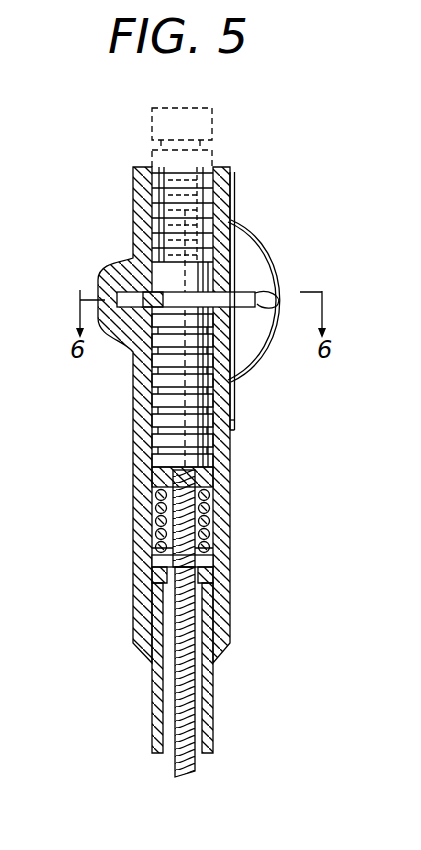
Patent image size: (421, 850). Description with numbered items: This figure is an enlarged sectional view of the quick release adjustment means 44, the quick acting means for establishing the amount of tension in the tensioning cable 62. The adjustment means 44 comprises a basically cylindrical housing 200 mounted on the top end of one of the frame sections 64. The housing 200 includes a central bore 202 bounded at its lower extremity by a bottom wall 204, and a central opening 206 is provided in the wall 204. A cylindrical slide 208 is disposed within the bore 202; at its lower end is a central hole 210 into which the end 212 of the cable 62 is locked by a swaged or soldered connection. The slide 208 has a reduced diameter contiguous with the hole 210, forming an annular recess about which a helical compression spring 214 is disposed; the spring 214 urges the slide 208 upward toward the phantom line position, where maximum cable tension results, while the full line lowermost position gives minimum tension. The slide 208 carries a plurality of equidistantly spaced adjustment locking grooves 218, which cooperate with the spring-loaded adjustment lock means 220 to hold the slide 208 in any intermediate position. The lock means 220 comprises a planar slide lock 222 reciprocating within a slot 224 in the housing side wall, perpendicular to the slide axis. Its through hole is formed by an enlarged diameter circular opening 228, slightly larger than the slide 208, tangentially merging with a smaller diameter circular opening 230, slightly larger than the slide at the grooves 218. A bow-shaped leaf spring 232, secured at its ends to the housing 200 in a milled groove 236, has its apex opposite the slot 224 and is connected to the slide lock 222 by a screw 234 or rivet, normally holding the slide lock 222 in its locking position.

The quick release adjustment means 44 is at (245, 452).
The tensioning cable 62 is at (192, 703).
The frame section 64 is at (207, 740).
The housing 200 is at (225, 583).
The central bore 202 is at (155, 450).
The bottom wall 204 is at (168, 566).
The central opening 206 is at (165, 578).
The cylindrical slide 208 is at (215, 128).
The central hole 210 is at (212, 518).
The cable end 212 is at (236, 490).
The helical compression spring 214 is at (212, 548).
The adjustment locking grooves 218 is at (156, 418).
The spring-loaded adjustment lock means 220 is at (272, 250).
The slide lock 222 is at (255, 308).
The slot 224 is at (142, 292).
The enlarged diameter circular opening 228 is at (238, 296).
The smaller diameter circular opening 230 is at (153, 292).
The leaf spring 232 is at (236, 370).
The screw 234 is at (272, 298).
The milled groove 236 is at (233, 428).